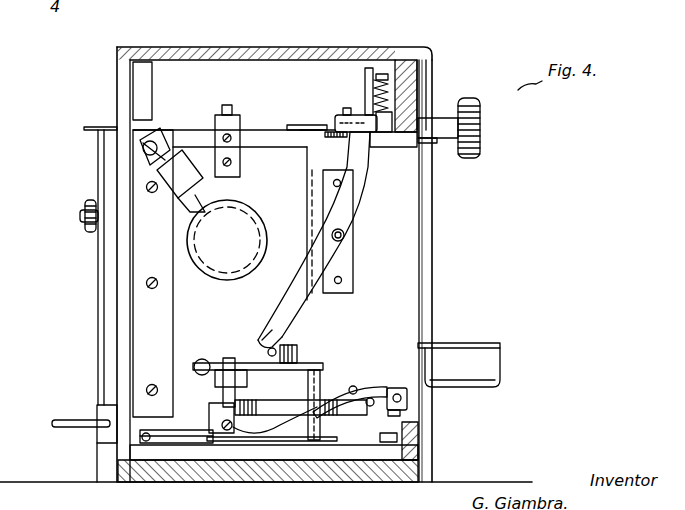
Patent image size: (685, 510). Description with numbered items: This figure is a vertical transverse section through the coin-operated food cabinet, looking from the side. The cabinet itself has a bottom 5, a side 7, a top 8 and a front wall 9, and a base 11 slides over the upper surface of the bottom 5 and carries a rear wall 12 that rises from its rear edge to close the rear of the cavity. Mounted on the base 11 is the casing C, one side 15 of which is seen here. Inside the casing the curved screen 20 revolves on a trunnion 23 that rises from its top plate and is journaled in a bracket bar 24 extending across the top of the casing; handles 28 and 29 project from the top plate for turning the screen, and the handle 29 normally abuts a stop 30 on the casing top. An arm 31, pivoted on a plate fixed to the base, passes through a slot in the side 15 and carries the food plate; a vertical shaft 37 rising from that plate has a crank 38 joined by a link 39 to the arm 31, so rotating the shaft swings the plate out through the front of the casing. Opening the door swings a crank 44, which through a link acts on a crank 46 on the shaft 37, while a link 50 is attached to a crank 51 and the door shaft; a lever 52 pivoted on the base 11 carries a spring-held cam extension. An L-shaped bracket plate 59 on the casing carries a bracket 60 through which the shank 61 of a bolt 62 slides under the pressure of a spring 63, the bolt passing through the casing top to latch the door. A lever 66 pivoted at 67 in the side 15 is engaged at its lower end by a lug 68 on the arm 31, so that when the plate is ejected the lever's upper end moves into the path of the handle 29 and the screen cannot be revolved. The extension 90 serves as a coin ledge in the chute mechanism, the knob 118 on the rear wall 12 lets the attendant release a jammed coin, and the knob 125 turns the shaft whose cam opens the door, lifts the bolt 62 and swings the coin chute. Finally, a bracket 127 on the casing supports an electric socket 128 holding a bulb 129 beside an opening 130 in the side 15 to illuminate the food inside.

The bottom 5 is at (244, 473).
The side 7 is at (317, 98).
The top 8 is at (308, 47).
The front wall 9 is at (430, 72).
The base 11 is at (213, 452).
The rear wall 12 is at (122, 90).
The side 15 is at (356, 231).
The curved screen 20 is at (103, 160).
The trunnion 23 is at (240, 107).
The bracket bar 24 is at (238, 127).
The handle 28 is at (82, 128).
The handle 29 is at (298, 126).
The stop 30 is at (345, 113).
The arm 31 is at (296, 372).
The vertical shaft 37 is at (228, 358).
The crank 38 is at (213, 420).
The link 39 is at (248, 342).
The crank 44 is at (397, 388).
The crank 46 is at (213, 428).
The link 50 is at (350, 387).
The crank 51 is at (372, 398).
The lever 52 is at (70, 420).
The L-shaped bracket plate 59 is at (370, 99).
The bracket 60 is at (380, 72).
The shank 61 is at (392, 76).
The bolt 62 is at (425, 106).
The spring 63 is at (420, 84).
The lever 66 is at (364, 166).
The pivot 67 is at (345, 234).
The lug 68 is at (294, 352).
The extension 90 is at (451, 357).
The operating knob 118 is at (84, 213).
The knob 125 is at (480, 123).
The bracket 127 is at (165, 150).
The electric socket 128 is at (185, 170).
The electric bulb 129 is at (236, 217).
The opening 130 is at (255, 243).
The casing C is at (190, 297).